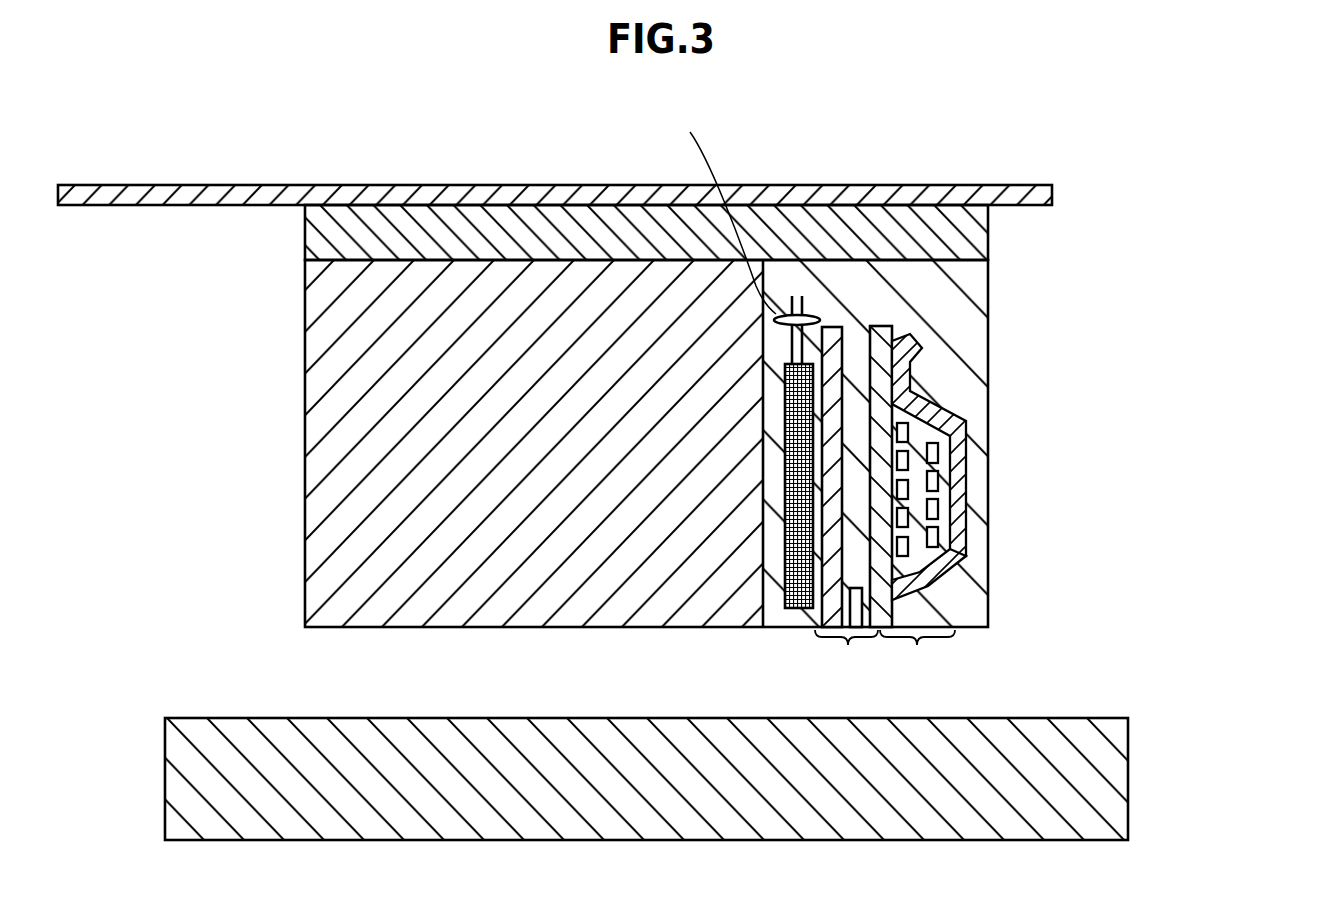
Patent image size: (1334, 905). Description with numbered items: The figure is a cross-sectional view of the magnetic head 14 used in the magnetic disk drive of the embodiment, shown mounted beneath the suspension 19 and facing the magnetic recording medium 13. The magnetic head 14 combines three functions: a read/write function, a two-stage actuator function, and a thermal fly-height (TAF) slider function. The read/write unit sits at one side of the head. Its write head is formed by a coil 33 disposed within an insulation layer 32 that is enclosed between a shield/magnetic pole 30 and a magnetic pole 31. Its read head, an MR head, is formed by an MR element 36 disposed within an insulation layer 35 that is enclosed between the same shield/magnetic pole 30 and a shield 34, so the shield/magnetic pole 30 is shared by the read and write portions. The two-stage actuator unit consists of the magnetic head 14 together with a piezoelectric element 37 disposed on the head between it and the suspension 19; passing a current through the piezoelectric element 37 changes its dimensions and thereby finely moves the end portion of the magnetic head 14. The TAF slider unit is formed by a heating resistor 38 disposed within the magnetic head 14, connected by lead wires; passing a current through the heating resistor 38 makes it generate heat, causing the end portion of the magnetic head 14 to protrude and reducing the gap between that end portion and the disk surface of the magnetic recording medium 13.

The suspension 19 is at (126, 193).
The piezoelectric element 37 is at (328, 236).
The magnetic head 14 is at (721, 397).
The magnetic recording medium 13 is at (277, 723).
The heating resistor 38 is at (790, 550).
The shield 34 is at (841, 327).
The shield/magnetic pole 30 is at (891, 330).
The insulation layer 35 is at (978, 368).
The magnetic pole 31 is at (928, 400).
The coil 33 is at (931, 454).
The insulation layer 32 is at (920, 558).
The MR element 36 is at (860, 606).